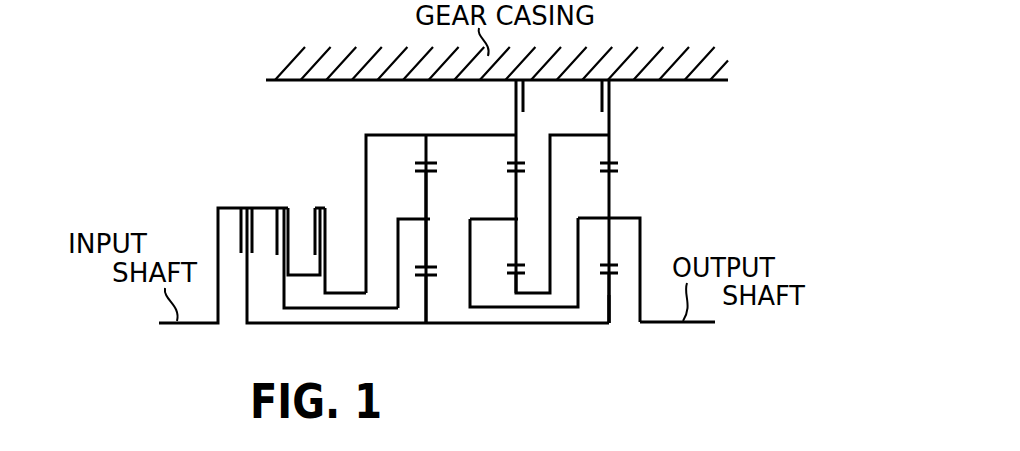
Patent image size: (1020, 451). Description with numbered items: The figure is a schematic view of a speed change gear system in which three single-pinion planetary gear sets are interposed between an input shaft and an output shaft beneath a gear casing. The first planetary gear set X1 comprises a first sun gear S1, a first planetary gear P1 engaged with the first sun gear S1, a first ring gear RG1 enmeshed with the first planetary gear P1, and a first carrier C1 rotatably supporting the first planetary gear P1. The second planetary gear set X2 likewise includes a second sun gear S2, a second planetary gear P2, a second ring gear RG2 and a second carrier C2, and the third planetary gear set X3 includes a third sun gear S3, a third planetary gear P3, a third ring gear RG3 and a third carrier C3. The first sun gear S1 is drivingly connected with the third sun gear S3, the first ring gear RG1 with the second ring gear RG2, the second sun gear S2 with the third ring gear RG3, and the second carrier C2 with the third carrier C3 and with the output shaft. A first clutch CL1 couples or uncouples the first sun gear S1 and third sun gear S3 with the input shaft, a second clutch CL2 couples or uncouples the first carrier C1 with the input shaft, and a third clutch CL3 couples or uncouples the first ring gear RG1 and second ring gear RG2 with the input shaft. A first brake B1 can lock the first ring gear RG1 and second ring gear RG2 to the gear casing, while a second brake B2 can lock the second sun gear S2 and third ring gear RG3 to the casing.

The first clutch CL1 is at (255, 213).
The second clutch CL2 is at (294, 213).
The third clutch CL3 is at (337, 213).
The first brake B1 is at (512, 96).
The second brake B2 is at (615, 96).
The first ring gear RG1 is at (428, 152).
The second ring gear RG2 is at (518, 143).
The third ring gear RG3 is at (609, 143).
The first carrier C1 is at (430, 220).
The second carrier C2 is at (518, 219).
The third carrier C3 is at (612, 218).
The first planetary gear P1 is at (427, 246).
The second planetary gear P2 is at (517, 246).
The third planetary gear P3 is at (610, 257).
The first sun gear S1 is at (427, 297).
The second sun gear S2 is at (517, 289).
The third sun gear S3 is at (608, 302).
The first planetary gear set X1 is at (421, 295).
The second planetary gear set X2 is at (527, 280).
The third planetary gear set X3 is at (598, 293).